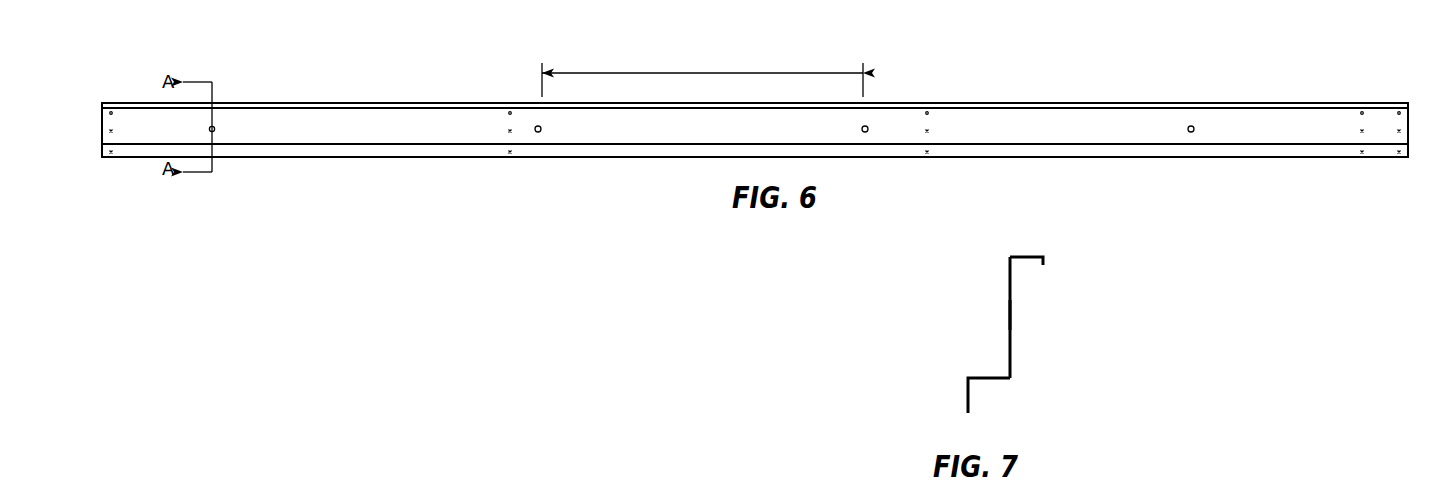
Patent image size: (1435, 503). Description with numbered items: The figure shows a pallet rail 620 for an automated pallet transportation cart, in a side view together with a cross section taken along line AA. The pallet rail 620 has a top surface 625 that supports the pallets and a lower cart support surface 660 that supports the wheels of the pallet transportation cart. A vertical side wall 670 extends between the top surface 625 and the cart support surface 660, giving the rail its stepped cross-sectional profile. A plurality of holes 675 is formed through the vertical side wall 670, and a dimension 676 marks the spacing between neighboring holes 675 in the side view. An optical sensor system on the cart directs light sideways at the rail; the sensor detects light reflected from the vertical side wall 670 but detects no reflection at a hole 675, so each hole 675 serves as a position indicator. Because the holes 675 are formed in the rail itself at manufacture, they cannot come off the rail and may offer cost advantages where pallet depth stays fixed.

In FIG. 6, the pallet rail 620 is at (102, 130).
In FIG. 6, the top surface 625 is at (350, 103).
In FIG. 7, the top surface 625 is at (1023, 257).
In FIG. 6, the cart support surface 660 is at (340, 143).
In FIG. 7, the cart support surface 660 is at (988, 375).
In FIG. 6, the vertical side wall 670 is at (1098, 135).
In FIG. 7, the vertical side wall 670 is at (1013, 300).
In FIG. 6, the holes 675 is at (215, 128).
In FIG. 7, the holes 675 is at (1013, 315).
In FIG. 6, the hole spacing 676 is at (632, 73).